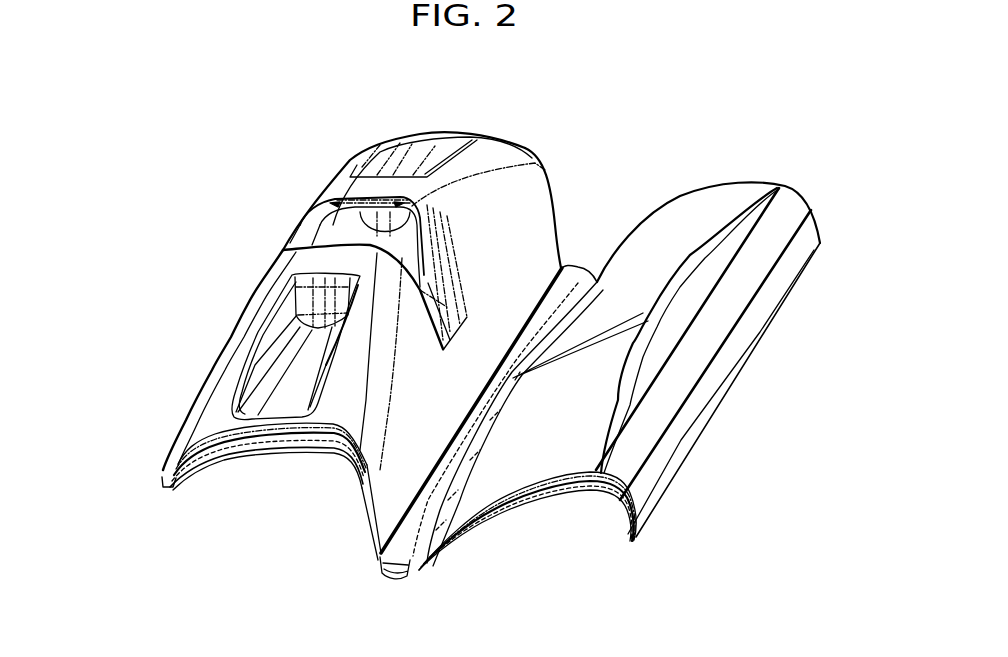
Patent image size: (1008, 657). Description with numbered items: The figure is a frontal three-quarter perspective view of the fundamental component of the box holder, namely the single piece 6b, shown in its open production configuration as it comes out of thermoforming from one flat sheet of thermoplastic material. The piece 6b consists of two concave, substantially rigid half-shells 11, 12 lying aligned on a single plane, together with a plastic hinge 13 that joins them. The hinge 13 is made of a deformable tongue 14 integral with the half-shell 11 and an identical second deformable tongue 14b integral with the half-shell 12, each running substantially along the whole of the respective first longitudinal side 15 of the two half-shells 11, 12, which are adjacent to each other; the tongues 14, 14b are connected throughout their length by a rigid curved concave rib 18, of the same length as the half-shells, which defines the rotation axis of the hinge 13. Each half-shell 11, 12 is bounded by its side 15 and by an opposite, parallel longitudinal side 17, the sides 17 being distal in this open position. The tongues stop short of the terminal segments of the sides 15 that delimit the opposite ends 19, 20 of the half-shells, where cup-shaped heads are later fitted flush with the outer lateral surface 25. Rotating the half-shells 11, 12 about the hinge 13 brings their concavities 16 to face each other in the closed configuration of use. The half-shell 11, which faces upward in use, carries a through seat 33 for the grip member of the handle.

The single piece 6b is at (630, 110).
The half-shell 11 is at (528, 186).
The half-shell 12 is at (667, 330).
The plastic hinge 13 is at (576, 240).
The deformable tongue 14 is at (410, 488).
The second deformable tongue 14b is at (471, 428).
The first longitudinal side 15 is at (447, 436).
The concavity 16 is at (267, 462).
The longitudinal side 17 is at (710, 430).
The rigid curved rib 18 is at (393, 568).
The end 19 is at (207, 448).
The end 20 is at (538, 138).
The outer lateral surface 25 is at (228, 330).
The through seat 33 is at (282, 240).